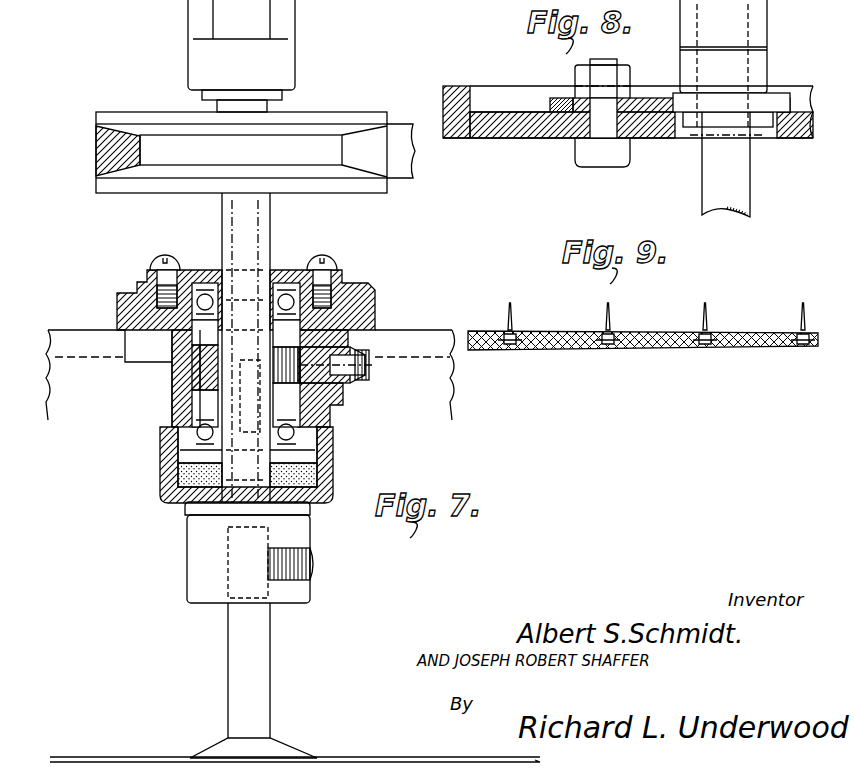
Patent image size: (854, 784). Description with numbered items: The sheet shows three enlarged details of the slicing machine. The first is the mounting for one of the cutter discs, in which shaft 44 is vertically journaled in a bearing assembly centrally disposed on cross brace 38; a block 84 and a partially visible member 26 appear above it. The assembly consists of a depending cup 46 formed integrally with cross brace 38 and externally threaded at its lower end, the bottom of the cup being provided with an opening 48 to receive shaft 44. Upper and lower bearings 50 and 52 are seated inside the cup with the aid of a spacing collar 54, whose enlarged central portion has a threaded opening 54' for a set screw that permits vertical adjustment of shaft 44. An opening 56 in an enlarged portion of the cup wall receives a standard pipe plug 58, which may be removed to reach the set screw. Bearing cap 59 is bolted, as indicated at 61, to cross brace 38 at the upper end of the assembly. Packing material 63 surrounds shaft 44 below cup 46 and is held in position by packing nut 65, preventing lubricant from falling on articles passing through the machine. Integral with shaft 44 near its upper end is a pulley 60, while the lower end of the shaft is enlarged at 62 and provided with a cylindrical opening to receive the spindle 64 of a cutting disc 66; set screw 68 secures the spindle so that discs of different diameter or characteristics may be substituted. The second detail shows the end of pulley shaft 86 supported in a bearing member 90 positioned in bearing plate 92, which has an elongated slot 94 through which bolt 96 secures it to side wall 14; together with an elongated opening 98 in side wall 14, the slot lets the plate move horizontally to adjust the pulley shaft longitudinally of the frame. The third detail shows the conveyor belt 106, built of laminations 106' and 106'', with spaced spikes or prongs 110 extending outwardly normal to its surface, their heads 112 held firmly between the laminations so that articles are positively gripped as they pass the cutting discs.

In FIG. 7, the frame 26 is at (62, 7).
In FIG. 7, the motor block 84 is at (282, 70).
In FIG. 7, the pulley 60 is at (302, 120).
In FIG. 7, the shaft 44 is at (255, 242).
In FIG. 7, the cross brace 38 is at (355, 300).
In FIG. 7, the upper bearing 50 is at (205, 296).
In FIG. 7, the bolt 61 is at (338, 250).
In FIG. 7, the bearing cap 59 is at (205, 290).
In FIG. 7, the depending cup 46 is at (182, 379).
In FIG. 7, the spacing collar 54 is at (166, 387).
In FIG. 7, the threaded opening 54' is at (326, 381).
In FIG. 7, the opening 56 is at (368, 340).
In FIG. 7, the pipe plug 58 is at (362, 358).
In FIG. 7, the lower bearing 52 is at (315, 418).
In FIG. 7, the opening 48 is at (178, 485).
In FIG. 7, the packing nut 65 is at (180, 470).
In FIG. 7, the packing material 63 is at (318, 476).
In FIG. 7, the enlarged lower end 62 is at (212, 576).
In FIG. 7, the set screw 68 is at (312, 576).
In FIG. 7, the spindle 64 is at (262, 686).
In FIG. 7, the cutting disc 66 is at (352, 745).
In FIG. 8, the side wall 14 is at (500, 120).
In FIG. 8, the bearing member 90 is at (758, 78).
In FIG. 8, the bearing plate 92 is at (648, 100).
In FIG. 8, the elongated slot 94 is at (575, 106).
In FIG. 8, the bolt 96 is at (598, 126).
In FIG. 8, the elongated opening 98 is at (676, 128).
In FIG. 8, the pulley shaft 86 is at (708, 182).
In FIG. 9, the needle 106 is at (657, 343).
In FIG. 9, the lamination 106' is at (543, 343).
In FIG. 9, the lamination 106'' is at (585, 320).
In FIG. 9, the spikes or prongs 110 is at (800, 318).
In FIG. 9, the heads 112 is at (712, 350).